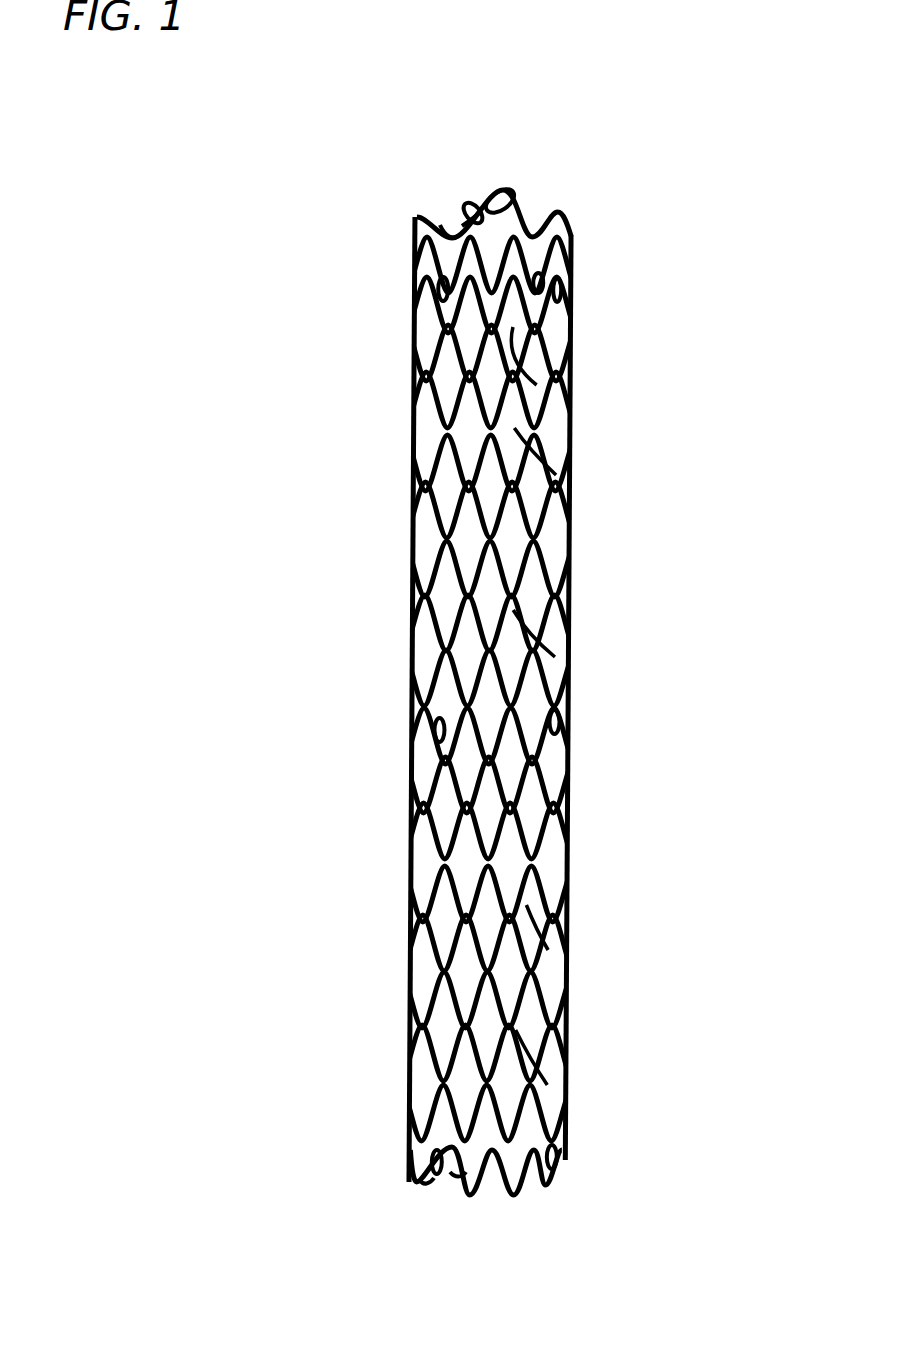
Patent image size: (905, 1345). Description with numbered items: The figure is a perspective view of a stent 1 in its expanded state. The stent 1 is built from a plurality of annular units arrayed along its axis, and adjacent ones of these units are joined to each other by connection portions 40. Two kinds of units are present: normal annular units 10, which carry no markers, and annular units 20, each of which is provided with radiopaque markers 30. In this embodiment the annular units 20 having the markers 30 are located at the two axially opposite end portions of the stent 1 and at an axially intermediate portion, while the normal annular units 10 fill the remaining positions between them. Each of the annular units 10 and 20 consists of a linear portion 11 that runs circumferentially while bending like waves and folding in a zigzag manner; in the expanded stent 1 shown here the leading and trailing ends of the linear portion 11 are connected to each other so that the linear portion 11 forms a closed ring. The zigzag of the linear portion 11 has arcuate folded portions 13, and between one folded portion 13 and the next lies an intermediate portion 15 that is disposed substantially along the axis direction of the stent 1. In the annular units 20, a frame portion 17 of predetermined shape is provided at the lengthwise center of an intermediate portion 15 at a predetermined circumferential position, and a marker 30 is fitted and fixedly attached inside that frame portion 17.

The stent 1 is at (709, 204).
The normal annular unit 10 is at (407, 307).
The linear portion 11 is at (525, 202).
The folded portion 13 is at (503, 192).
The intermediate portion 15 is at (476, 204).
The frame portion 17 is at (455, 232).
The annular unit having markers 20 is at (588, 250).
The radiopaque marker 30 is at (522, 190).
The connection portion 40 is at (470, 385).